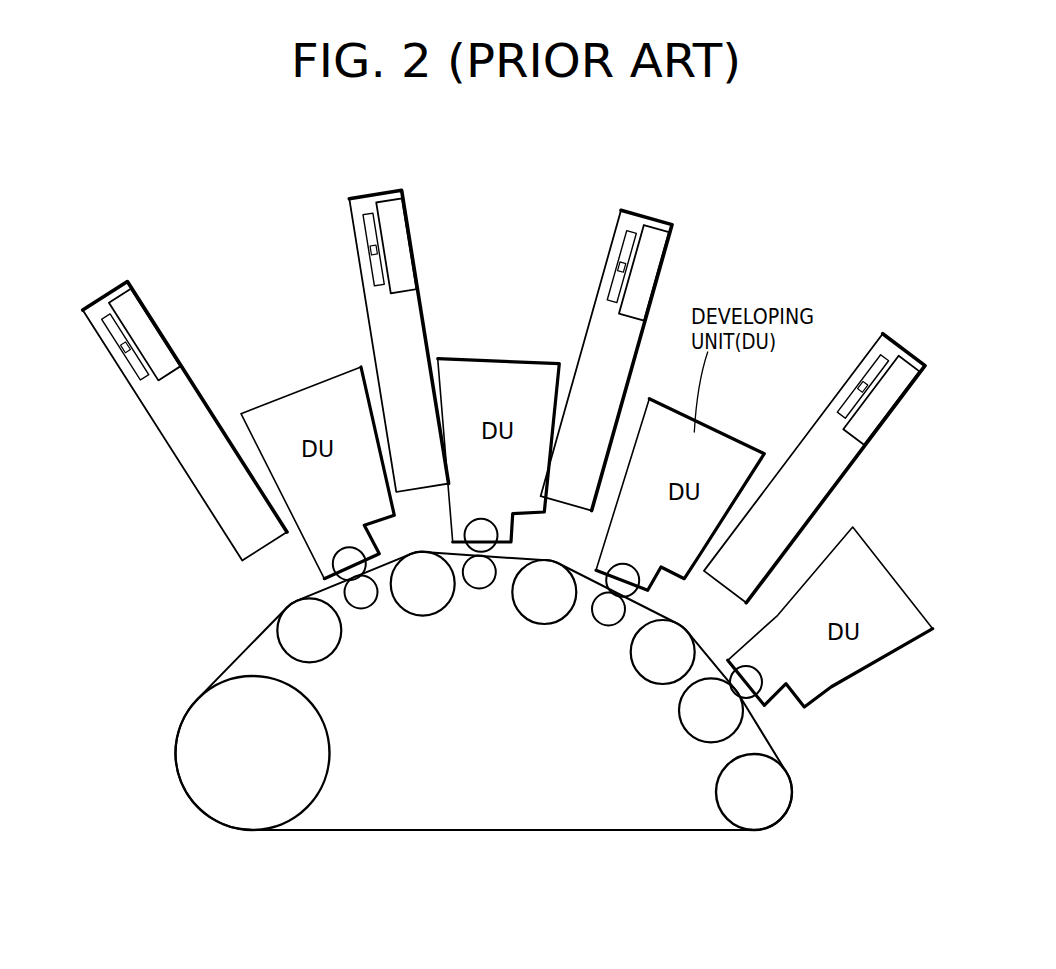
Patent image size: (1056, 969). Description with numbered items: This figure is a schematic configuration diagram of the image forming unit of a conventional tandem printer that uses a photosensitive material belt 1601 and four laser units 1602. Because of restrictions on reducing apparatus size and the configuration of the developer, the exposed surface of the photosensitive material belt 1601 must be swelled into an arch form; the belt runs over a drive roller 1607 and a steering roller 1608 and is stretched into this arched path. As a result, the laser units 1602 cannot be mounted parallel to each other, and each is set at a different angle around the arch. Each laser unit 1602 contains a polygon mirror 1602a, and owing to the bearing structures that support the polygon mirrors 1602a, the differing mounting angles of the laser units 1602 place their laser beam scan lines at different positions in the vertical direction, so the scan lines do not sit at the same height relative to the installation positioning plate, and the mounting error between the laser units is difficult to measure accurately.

The photosensitive material belt 1601 is at (242, 652).
The laser unit 1602 is at (180, 398).
The polygon mirror 1602a is at (107, 318).
The drive roller 1607 is at (228, 802).
The steering roller 1608 is at (750, 798).